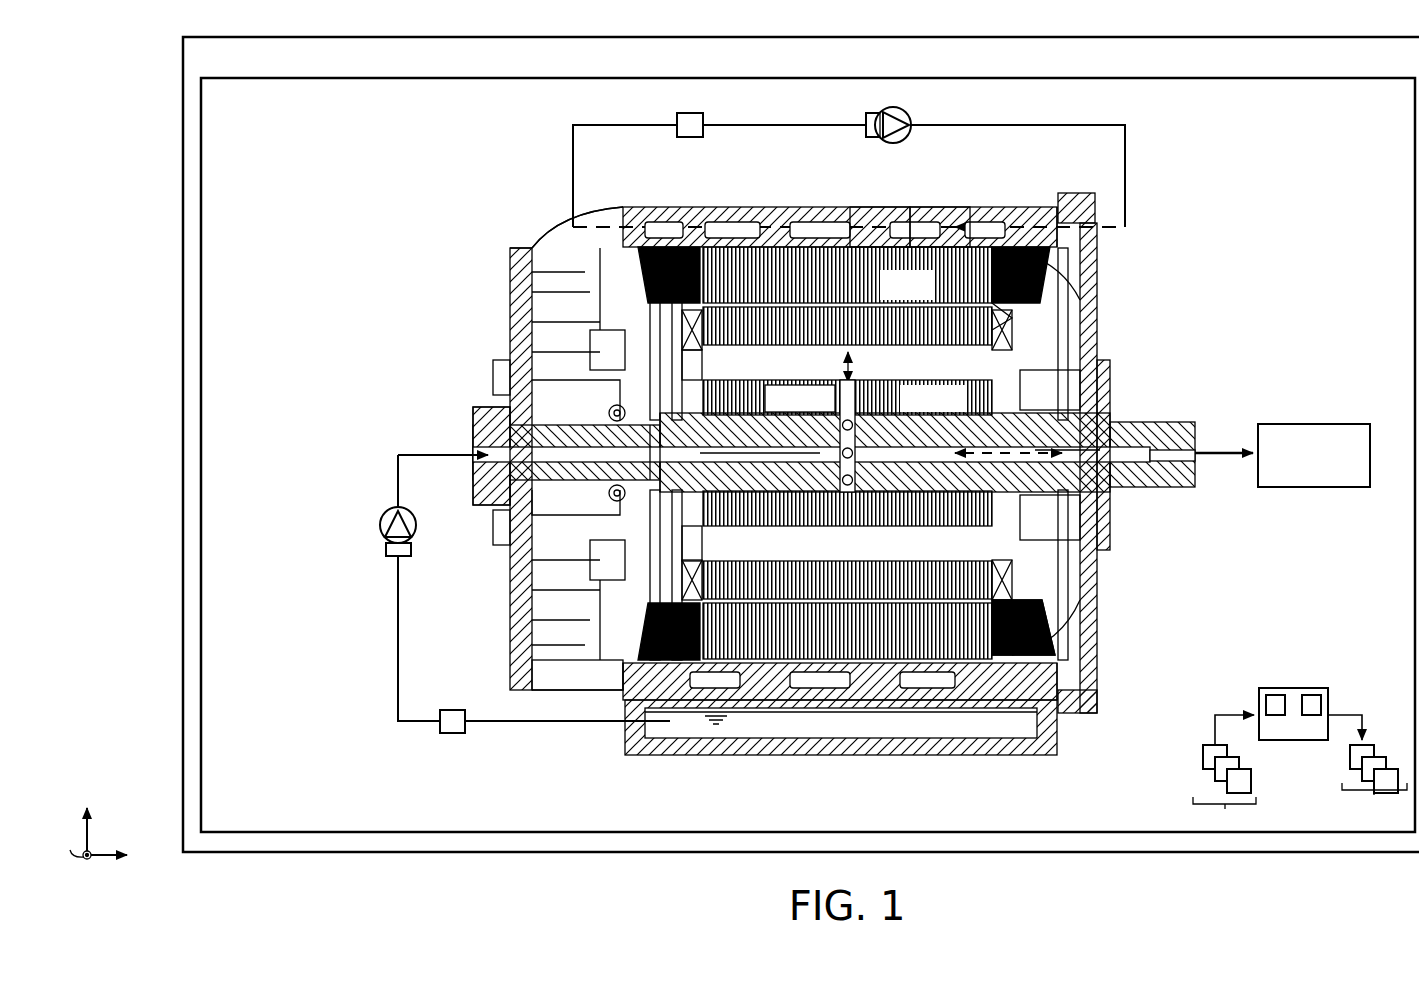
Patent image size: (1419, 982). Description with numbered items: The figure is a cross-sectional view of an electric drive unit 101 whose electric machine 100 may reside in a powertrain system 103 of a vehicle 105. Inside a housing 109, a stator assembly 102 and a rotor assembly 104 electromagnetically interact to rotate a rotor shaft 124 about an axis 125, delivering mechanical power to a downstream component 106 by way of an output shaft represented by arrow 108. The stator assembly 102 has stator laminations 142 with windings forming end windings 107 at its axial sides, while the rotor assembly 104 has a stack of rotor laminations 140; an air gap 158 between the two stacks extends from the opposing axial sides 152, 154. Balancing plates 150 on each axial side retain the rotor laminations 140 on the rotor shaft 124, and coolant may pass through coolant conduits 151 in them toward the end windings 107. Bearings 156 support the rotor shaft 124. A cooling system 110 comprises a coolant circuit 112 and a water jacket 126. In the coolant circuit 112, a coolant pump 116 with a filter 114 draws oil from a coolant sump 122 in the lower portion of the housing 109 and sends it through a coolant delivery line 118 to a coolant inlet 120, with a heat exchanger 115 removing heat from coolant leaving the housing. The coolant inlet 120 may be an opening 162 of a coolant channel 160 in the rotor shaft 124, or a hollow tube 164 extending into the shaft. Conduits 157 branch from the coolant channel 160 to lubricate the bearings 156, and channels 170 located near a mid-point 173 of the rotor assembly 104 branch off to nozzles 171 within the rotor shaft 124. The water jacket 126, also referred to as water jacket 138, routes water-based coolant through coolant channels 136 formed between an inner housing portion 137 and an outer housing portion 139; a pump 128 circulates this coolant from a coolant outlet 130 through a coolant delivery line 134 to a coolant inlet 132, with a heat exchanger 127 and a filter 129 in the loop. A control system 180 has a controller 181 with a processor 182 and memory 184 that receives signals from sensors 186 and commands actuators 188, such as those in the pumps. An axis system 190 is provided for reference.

The electric machine 100 is at (1264, 268).
The electric drive unit 101 is at (1344, 182).
The stator assembly 102 is at (940, 452).
The powertrain system 103 is at (311, 78).
The rotor assembly 104 is at (982, 578).
The vehicle 105 is at (289, 37).
The downstream component 106 is at (1330, 424).
The end windings 107 is at (1030, 278).
The arrow 108 is at (1218, 447).
The housing 109 is at (538, 243).
The cooling system 110 is at (482, 141).
The coolant circuit 112 is at (318, 450).
The filter 114 is at (386, 554).
The heat exchanger 115 is at (442, 733).
The coolant pump 116 is at (381, 525).
The coolant delivery line 118 is at (397, 672).
The coolant inlet 120 is at (806, 463).
The coolant sump 122 is at (708, 768).
The rotor shaft 124 is at (1125, 438).
The axis 125 is at (1035, 450).
The water jacket 126 is at (553, 140).
The heat exchanger 127 is at (690, 113).
The pump 128 is at (910, 110).
The filter 129 is at (867, 113).
The coolant outlet 130 is at (727, 222).
The coolant inlet 132 is at (1108, 205).
The coolant delivery line 134 is at (1036, 125).
The coolant channels 136 is at (822, 228).
The inner housing portion 137 is at (928, 230).
The water jacket 138 is at (840, 428).
The outer housing portion 139 is at (880, 210).
The stack of rotor laminations 140 is at (975, 330).
The stator laminations 142 is at (972, 260).
The balancing plates 150 is at (688, 356).
The coolant conduits 151 is at (688, 328).
The axial side 152 is at (438, 318).
The axial side 154 is at (1217, 343).
The bearings 156 is at (590, 560).
The conduits 157 is at (655, 437).
The air gap 158 is at (1025, 317).
The coolant channel 160 is at (805, 458).
The opening 162 is at (490, 457).
The hollow tube 164 is at (518, 470).
The channels 170 is at (852, 437).
The nozzles 171 is at (838, 415).
The mid-point 173 is at (842, 367).
The control system 180 is at (1300, 725).
The controller 181 is at (1282, 688).
The processor 182 is at (1266, 705).
The memory 184 is at (1321, 705).
The sensors 186 is at (1224, 774).
The actuators 188 is at (1367, 766).
The axis system 190 is at (112, 810).